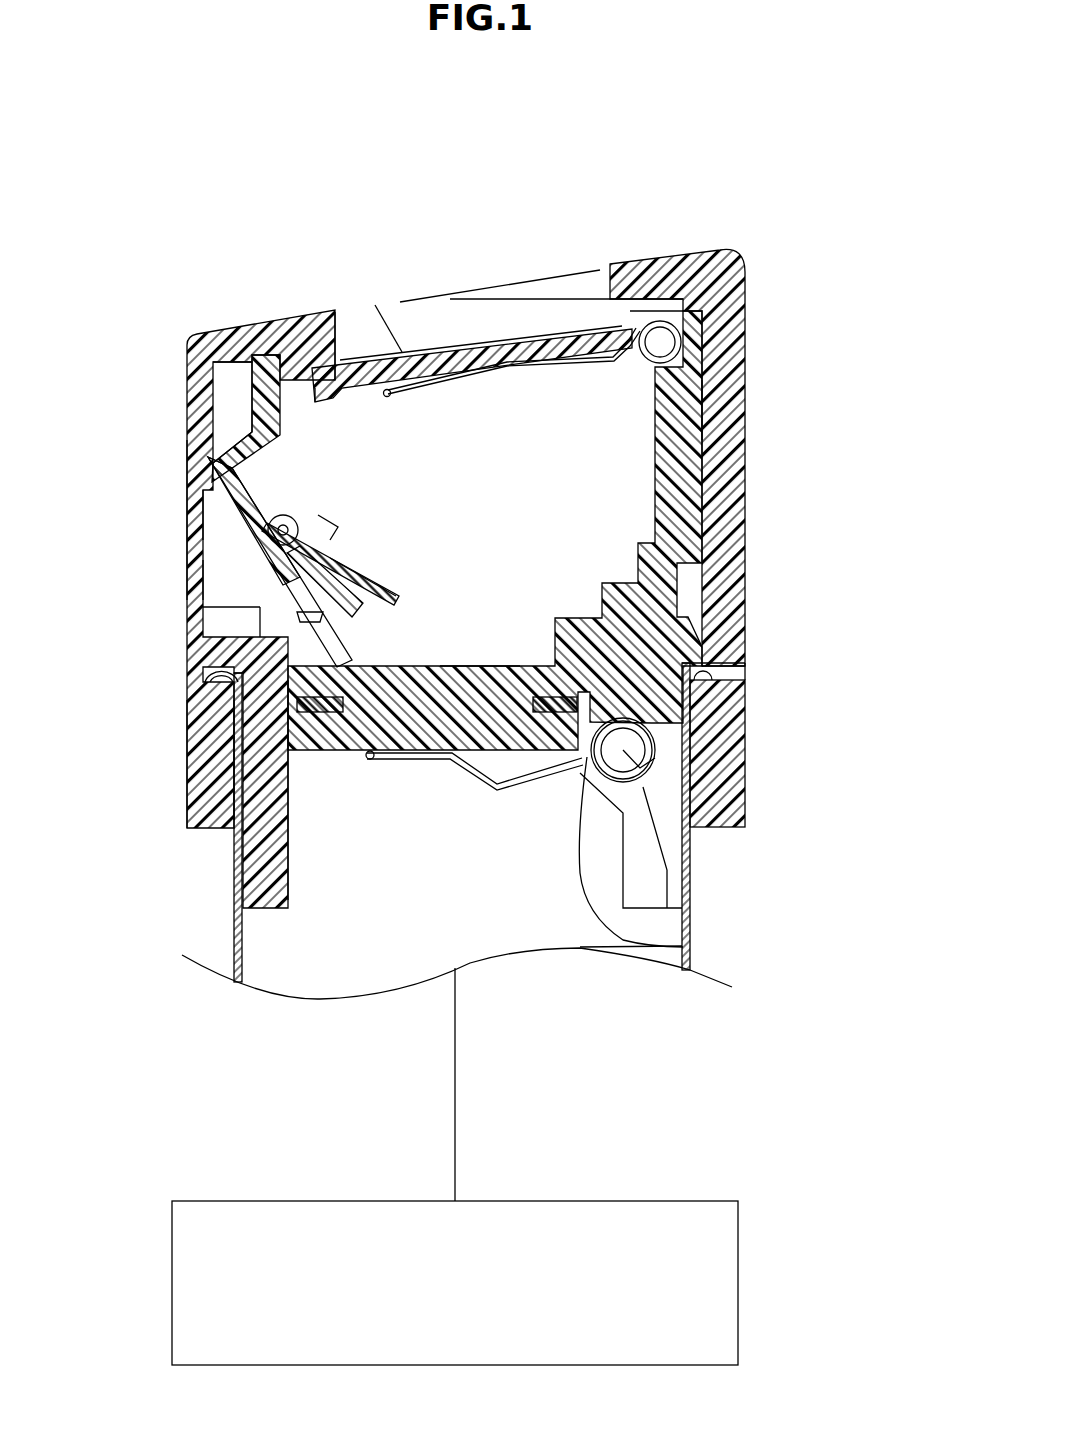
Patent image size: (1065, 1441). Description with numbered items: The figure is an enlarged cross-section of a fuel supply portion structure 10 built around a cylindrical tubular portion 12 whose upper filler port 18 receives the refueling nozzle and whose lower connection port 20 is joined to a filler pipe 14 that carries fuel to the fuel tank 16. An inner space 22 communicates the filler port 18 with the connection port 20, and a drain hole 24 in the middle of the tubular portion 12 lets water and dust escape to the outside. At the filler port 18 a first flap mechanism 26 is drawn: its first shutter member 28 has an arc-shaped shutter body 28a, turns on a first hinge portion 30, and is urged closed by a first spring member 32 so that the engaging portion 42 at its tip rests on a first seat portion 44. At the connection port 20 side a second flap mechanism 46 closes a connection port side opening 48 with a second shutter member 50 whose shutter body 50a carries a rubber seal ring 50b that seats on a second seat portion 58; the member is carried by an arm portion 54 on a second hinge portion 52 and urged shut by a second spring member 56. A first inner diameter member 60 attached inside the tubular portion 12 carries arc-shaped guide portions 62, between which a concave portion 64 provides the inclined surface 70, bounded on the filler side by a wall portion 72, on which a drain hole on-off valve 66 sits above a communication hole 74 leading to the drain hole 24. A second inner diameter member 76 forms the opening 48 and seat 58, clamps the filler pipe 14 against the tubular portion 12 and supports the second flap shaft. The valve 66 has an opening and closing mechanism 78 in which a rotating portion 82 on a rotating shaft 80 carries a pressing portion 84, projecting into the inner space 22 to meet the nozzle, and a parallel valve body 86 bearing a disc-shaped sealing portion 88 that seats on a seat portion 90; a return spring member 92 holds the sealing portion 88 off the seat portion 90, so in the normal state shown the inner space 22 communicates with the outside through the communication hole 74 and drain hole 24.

The fuel supply portion structure 10 is at (790, 170).
The tubular portion 12 is at (748, 502).
The filler pipe 14 is at (690, 897).
The fuel tank 16 is at (740, 1285).
The filler port 18 is at (338, 352).
The connection port 20 is at (700, 845).
The inner space 22 is at (570, 527).
The drain hole 24 is at (180, 520).
The first flap mechanism 26 is at (472, 334).
The first shutter member 28 is at (534, 338).
The shutter body 28a is at (568, 362).
The first hinge portion 30 is at (700, 300).
The first spring member 32 is at (668, 345).
The engaging portion 42 is at (302, 342).
The first seat portion 44 is at (340, 403).
The second flap mechanism 46 is at (462, 815).
The connection port side opening 48 is at (366, 695).
The second shutter member 50 is at (518, 660).
The shutter body 50a is at (480, 664).
The seal ring 50b is at (706, 660).
The second hinge portion 52 is at (668, 725).
The arm portion 54 is at (690, 947).
The second spring member 56 is at (710, 672).
The second seat portion 58 is at (190, 815).
The first inner diameter member 60 is at (707, 410).
The guide portion 62 is at (340, 526).
The concave portion 64 is at (220, 382).
The drain hole on-off valve 66 is at (242, 640).
The inclined surface 70 is at (196, 502).
The wall portion 72 is at (205, 418).
The communication hole 74 is at (222, 672).
The second inner diameter member 76 is at (237, 770).
The opening and closing mechanism 78 is at (368, 546).
The rotating shaft 80 is at (296, 520).
The rotating portion 82 is at (268, 508).
The pressing portion 84 is at (382, 580).
The valve body 86 is at (360, 602).
The disc-shaped sealing portion 88 is at (328, 615).
The seat portion 90 is at (258, 735).
The return spring member 92 is at (238, 588).